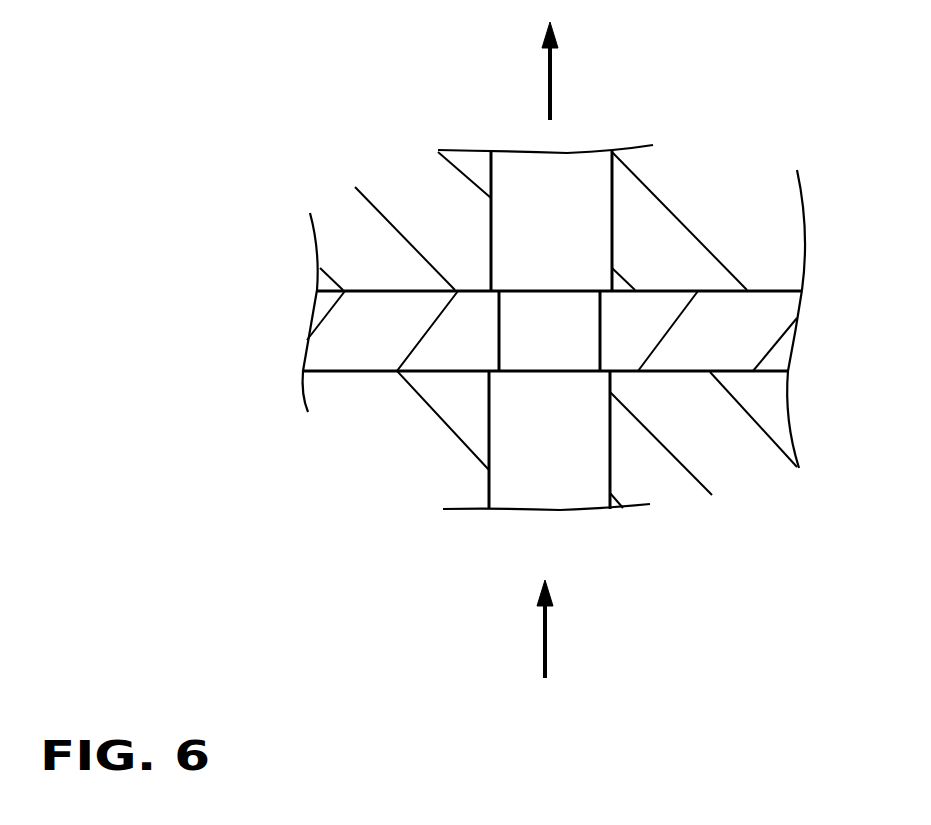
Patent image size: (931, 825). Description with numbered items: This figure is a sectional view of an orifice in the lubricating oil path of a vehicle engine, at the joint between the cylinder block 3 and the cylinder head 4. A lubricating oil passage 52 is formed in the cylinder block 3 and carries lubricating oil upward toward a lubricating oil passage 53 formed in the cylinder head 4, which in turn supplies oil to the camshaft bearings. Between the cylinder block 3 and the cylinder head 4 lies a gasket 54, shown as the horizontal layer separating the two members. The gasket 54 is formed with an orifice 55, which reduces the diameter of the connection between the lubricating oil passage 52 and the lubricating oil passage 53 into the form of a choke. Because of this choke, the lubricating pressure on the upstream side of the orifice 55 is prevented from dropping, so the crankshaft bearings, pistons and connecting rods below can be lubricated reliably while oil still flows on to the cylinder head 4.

The cylinder block 3 is at (773, 403).
The cylinder head 4 is at (788, 247).
The lubricating oil passage 52 is at (537, 482).
The lubricating oil passage 53 is at (514, 170).
The gasket 54 is at (343, 352).
The orifice 55 is at (542, 360).